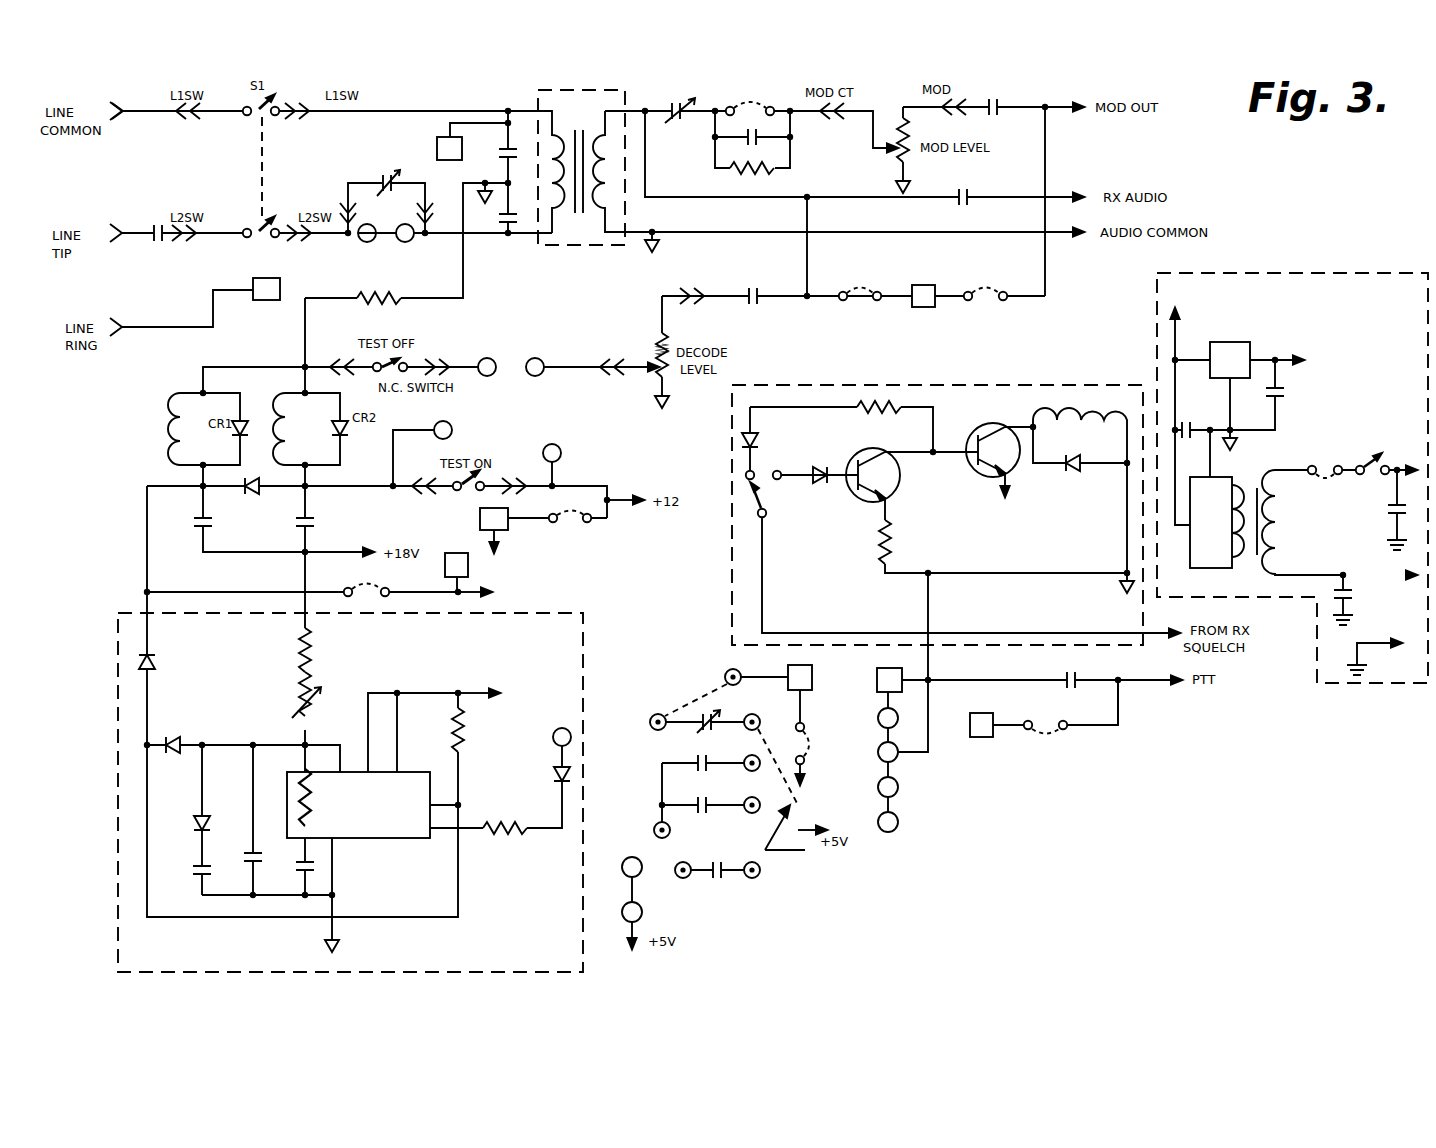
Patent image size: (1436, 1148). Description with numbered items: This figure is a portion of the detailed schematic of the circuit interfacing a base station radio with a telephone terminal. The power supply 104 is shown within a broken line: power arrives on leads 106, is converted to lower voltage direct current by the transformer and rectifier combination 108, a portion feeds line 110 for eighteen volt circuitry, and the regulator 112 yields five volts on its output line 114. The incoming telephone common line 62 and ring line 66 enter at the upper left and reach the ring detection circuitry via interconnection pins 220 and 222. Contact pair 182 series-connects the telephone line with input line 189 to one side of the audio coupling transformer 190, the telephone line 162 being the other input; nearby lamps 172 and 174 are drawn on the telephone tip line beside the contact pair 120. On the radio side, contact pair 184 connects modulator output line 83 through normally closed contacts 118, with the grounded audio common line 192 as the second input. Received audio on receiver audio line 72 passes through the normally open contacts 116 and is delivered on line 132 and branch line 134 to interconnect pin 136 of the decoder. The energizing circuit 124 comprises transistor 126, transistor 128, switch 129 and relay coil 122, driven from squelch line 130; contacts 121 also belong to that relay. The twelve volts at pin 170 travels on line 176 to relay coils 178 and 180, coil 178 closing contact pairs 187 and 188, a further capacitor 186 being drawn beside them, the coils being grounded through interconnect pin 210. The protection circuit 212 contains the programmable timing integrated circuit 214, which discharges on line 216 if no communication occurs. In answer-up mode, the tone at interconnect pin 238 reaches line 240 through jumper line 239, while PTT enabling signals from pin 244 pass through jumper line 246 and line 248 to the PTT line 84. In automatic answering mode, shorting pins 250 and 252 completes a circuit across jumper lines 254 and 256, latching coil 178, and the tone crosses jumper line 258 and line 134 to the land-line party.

The telephone line 162 is at (150, 111).
The incoming telephone common line 62 is at (144, 233).
The contact pair 182 is at (124, 244).
The ring line 66 is at (174, 326).
The interconnection pin 222 is at (242, 302).
The interconnection pin 220 is at (436, 148).
The relay contact pair 120 is at (378, 180).
The lamp 172 is at (370, 244).
The lamp 174 is at (408, 243).
The input line 189 is at (522, 244).
The audio coupling transformer 190 is at (537, 94).
The audio common line 192 is at (641, 232).
The relay contact pair 118 is at (680, 100).
The contact pair 184 is at (999, 102).
The modulator output line 83 is at (1058, 104).
The line 240 is at (1046, 142).
The relay contact pair 116 is at (969, 194).
The receiver audio line 72 is at (1069, 194).
The line 132 is at (812, 200).
The branch line 134 is at (806, 250).
The interconnect pin 136 is at (539, 364).
The interconnect pin 210 is at (482, 364).
The jumper line 258 is at (866, 282).
The interconnect pin 238 is at (914, 284).
The jumper line 239 is at (984, 284).
The power supply 104 is at (1292, 466).
The line 110 is at (1184, 326).
The regulator 112 is at (1230, 342).
The output line 114 is at (1284, 356).
The leads 106 is at (1410, 456).
The transformer and rectifier combination 108 is at (1252, 570).
The relay coil 178 is at (180, 419).
The relay coil 180 is at (293, 396).
The pin 170 is at (452, 431).
The line 176 is at (366, 485).
The interconnecting pin 250 is at (480, 519).
The jumper line 256 is at (573, 512).
The jumper line 254 is at (358, 588).
The interconnecting pin 252 is at (444, 576).
The protection circuit 212 is at (320, 729).
The programmable timing integrated circuit 214 is at (412, 772).
The line 216 is at (553, 740).
The relay contacts 121 is at (195, 838).
The energizing circuit 124 is at (936, 515).
The switch 129 is at (765, 505).
The transistor 126 is at (860, 494).
The transistor 128 is at (971, 478).
The relay coil 122 is at (1076, 408).
The squelch line 130 is at (1086, 630).
The contact pair 187 is at (690, 734).
The capacitor 186 is at (712, 880).
The contact pair 188 is at (1068, 678).
The PTT line 84 is at (1160, 690).
The interconnection pin 244 is at (976, 730).
The jumper line 246 is at (1048, 732).
The line 248 is at (1116, 722).